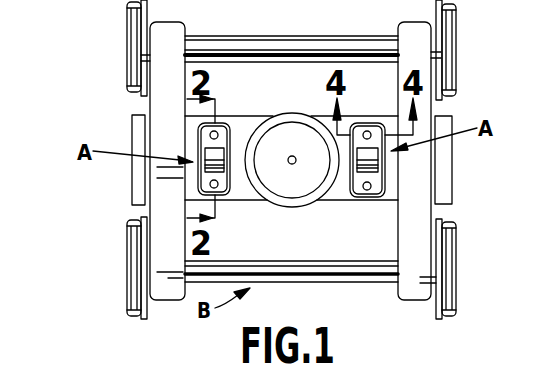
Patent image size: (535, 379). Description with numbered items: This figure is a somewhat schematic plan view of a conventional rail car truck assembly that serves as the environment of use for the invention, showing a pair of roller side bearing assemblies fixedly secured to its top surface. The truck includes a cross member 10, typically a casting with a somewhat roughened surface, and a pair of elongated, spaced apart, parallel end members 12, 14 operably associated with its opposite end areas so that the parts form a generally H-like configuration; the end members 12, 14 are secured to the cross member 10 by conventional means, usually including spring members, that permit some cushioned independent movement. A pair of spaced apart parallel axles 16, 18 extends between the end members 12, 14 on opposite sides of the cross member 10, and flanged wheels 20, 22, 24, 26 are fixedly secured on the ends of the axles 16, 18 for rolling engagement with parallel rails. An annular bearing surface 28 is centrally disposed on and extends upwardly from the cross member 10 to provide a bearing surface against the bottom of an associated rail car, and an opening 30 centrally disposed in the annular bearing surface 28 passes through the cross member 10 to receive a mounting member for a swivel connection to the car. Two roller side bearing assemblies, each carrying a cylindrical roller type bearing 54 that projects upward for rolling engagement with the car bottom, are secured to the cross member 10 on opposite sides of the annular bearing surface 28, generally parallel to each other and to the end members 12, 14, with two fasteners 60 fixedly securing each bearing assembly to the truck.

The cross member 10 is at (243, 125).
The end member 12 is at (450, 192).
The end member 14 is at (150, 204).
The axle 16 is at (288, 38).
The axle 18 is at (327, 275).
The flanged wheel 20 is at (450, 62).
The flanged wheel 22 is at (453, 283).
The flanged wheel 24 is at (130, 284).
The flanged wheel 26 is at (133, 60).
The annular bearing surface 28 is at (291, 113).
The opening 30 is at (291, 165).
The cylindrical roller type bearing 54 is at (210, 152).
The fastener 60 is at (367, 131).